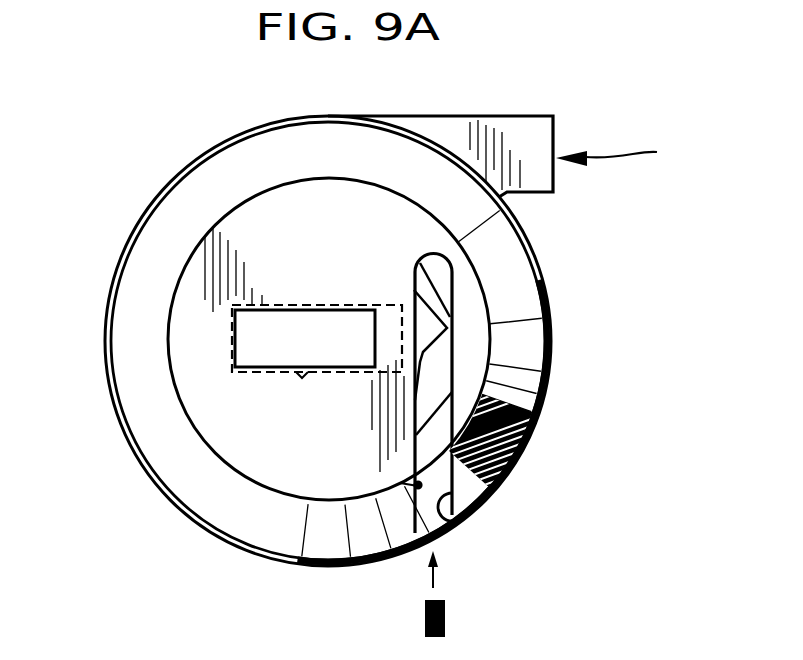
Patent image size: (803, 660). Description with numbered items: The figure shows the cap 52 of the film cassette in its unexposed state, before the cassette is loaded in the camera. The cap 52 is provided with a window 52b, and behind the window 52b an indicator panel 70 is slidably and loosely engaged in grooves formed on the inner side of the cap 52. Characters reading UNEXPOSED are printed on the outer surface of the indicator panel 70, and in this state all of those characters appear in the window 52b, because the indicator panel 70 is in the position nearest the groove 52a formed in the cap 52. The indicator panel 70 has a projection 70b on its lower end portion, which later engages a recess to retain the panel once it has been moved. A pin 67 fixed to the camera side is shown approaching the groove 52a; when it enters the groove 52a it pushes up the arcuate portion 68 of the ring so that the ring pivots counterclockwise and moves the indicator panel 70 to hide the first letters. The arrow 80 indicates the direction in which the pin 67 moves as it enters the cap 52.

The cap 52 is at (222, 166).
The groove 52a is at (447, 535).
The window 52b is at (294, 306).
The pin 67 is at (445, 618).
The arcuate portion 68 is at (537, 413).
The indicator panel 70 is at (243, 358).
The projection 70b is at (302, 378).
The light beam direction arrow 80 is at (630, 157).